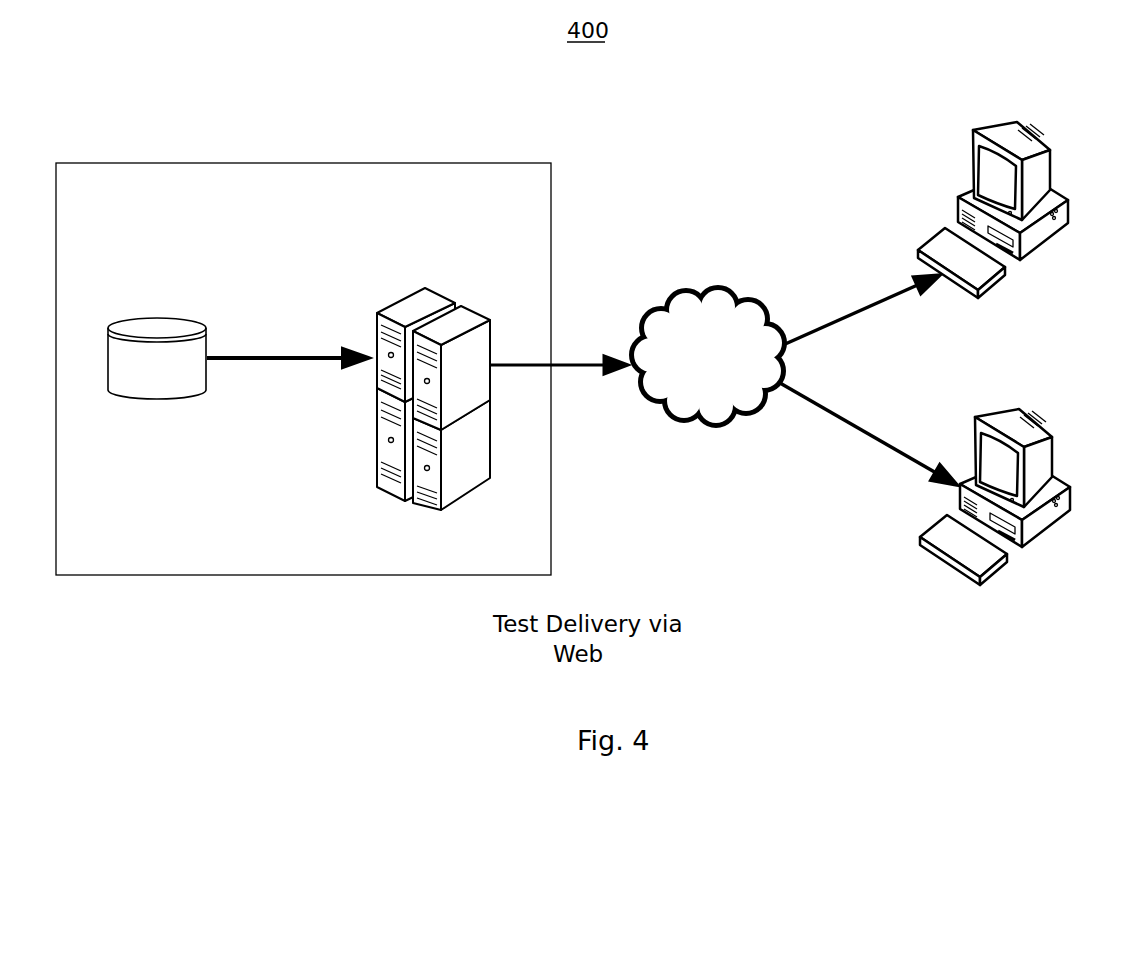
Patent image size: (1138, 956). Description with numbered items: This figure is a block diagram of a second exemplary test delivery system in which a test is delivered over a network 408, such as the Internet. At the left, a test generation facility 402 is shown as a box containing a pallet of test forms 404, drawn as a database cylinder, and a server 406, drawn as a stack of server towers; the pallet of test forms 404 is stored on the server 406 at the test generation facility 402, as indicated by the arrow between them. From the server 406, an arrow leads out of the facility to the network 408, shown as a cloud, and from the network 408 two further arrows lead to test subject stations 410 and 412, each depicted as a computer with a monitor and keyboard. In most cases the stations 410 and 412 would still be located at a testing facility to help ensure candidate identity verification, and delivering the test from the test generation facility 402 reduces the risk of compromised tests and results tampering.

The test generation facility 402 is at (348, 163).
The pallet of test forms 404 is at (160, 318).
The server 406 is at (440, 290).
The network 408 is at (710, 288).
The test subject station 410 is at (1002, 125).
The test subject station 412 is at (1050, 535).